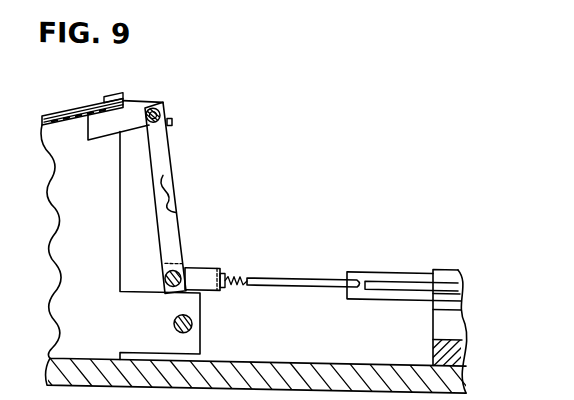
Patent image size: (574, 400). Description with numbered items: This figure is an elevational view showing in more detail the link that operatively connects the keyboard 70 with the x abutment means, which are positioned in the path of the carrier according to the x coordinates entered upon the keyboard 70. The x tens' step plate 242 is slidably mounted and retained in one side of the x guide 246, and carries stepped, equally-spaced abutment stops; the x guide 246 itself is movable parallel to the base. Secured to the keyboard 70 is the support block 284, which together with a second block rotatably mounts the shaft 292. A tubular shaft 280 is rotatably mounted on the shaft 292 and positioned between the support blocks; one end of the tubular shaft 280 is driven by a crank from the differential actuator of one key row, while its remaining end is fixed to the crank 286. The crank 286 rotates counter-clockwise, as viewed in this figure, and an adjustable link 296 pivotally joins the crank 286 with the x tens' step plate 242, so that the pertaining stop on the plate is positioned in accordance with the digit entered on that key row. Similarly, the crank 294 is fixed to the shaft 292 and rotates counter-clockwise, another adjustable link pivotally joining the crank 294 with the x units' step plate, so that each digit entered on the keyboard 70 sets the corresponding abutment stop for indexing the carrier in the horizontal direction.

The keyboard 70 is at (70, 102).
The support block 284 is at (133, 108).
The shaft 292 is at (155, 109).
The tubular shaft 280 is at (169, 119).
The crank 286 is at (160, 141).
The crank 294 is at (168, 192).
The adjustable link 296 is at (284, 279).
The x tens' step plate 242 is at (362, 271).
The x guide 246 is at (445, 266).